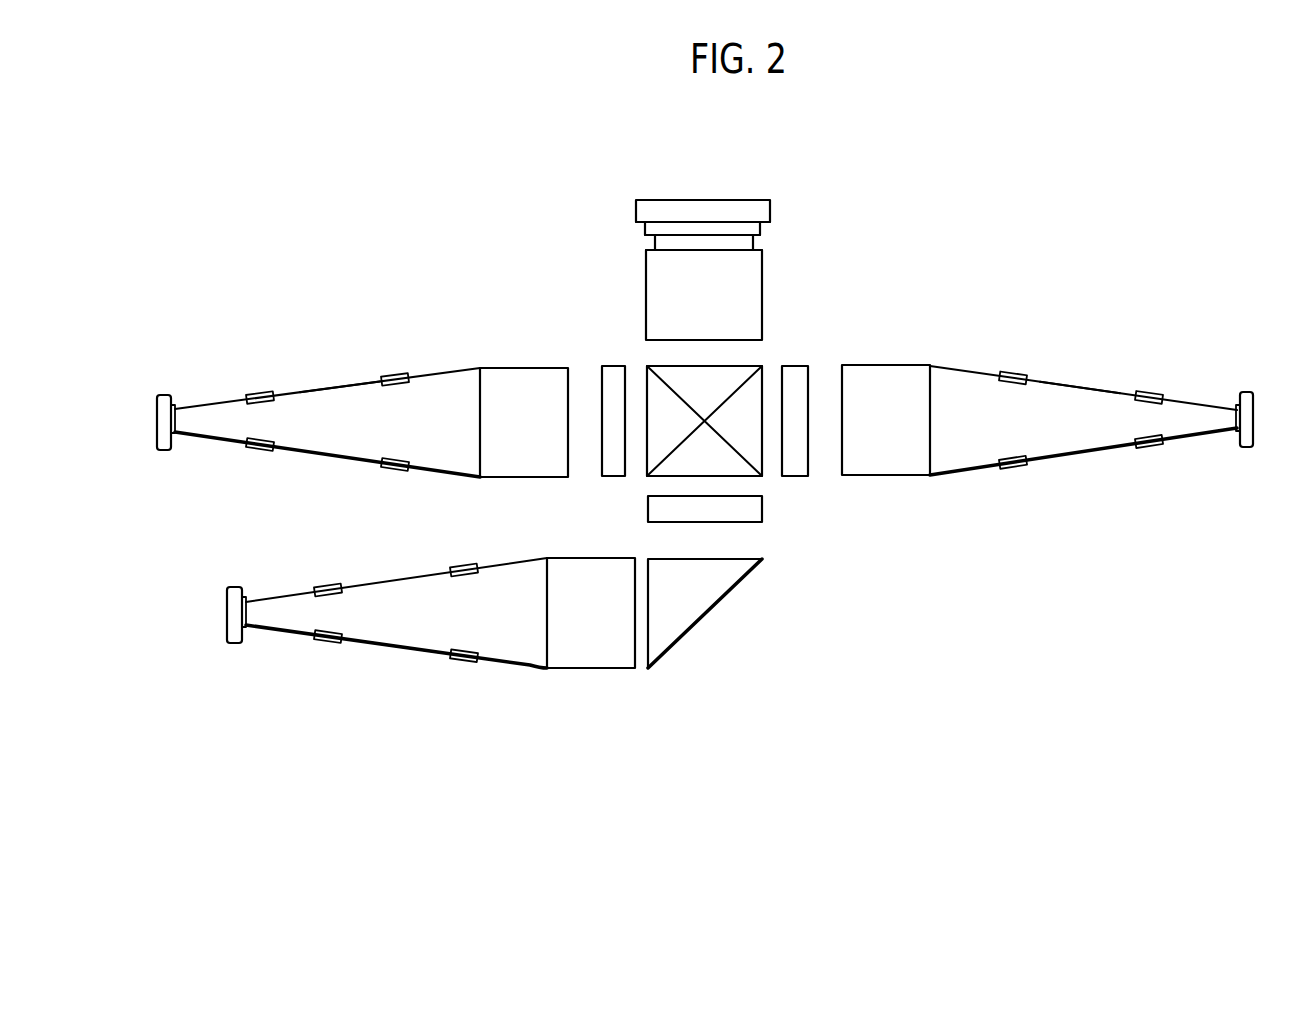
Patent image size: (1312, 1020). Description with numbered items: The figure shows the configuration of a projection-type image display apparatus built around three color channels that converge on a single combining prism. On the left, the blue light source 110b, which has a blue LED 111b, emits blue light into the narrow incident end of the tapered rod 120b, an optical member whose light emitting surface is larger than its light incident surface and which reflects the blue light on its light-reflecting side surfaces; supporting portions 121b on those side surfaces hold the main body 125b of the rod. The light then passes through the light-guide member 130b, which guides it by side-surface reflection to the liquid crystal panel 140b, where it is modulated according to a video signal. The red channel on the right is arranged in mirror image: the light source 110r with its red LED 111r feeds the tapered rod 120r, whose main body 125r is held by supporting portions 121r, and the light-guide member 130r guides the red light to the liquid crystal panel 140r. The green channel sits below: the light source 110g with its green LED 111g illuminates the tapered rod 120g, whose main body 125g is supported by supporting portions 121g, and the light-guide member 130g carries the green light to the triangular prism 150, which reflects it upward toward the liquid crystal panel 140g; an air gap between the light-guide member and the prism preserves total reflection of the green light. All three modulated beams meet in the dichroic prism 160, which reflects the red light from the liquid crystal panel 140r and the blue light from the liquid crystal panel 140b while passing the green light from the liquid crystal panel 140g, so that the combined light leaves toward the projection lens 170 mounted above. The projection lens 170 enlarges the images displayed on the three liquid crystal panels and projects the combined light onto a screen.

The light source 110b is at (163, 392).
The blue LED 111b is at (175, 405).
The tapered rod 120b is at (316, 378).
The supporting portions 121b is at (258, 393).
The main body 125b is at (453, 370).
The light-guide member 130b is at (520, 380).
The liquid crystal panel 140b is at (612, 378).
The light source 110r is at (1245, 386).
The red LED 111r is at (1235, 432).
The tapered rod 120r is at (1080, 362).
The supporting portions 121r is at (1012, 370).
The main body 125r is at (962, 362).
The light-guide member 130r is at (890, 365).
The liquid crystal panel 140r is at (795, 378).
The light source 110g is at (233, 646).
The green LED 111g is at (243, 630).
The tapered rod 120g is at (413, 661).
The supporting portions 121g is at (326, 585).
The main body 125g is at (522, 665).
The light-guide member 130g is at (598, 655).
The liquid crystal panel 140g is at (752, 504).
The triangular prism 150 is at (697, 596).
The dichroic prism 160 is at (655, 458).
The projection lens 170 is at (750, 268).